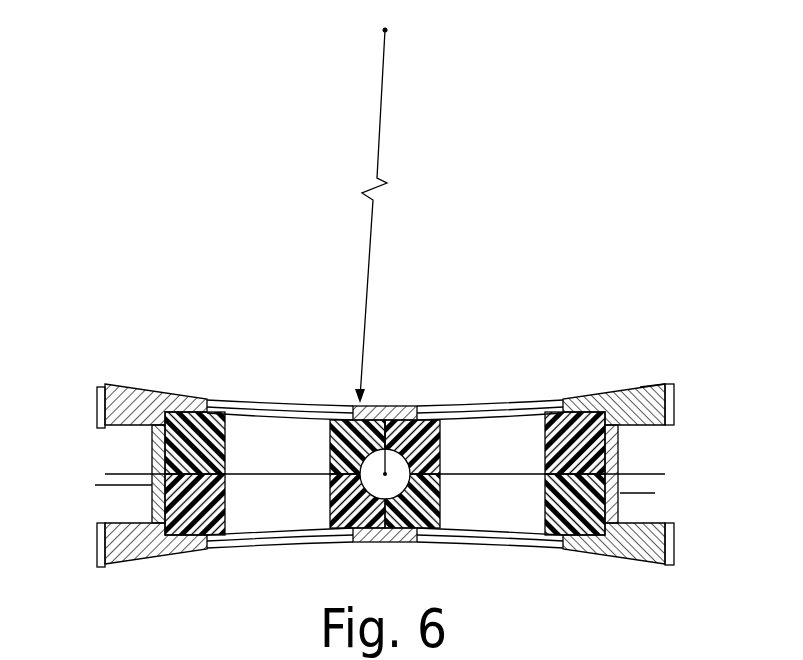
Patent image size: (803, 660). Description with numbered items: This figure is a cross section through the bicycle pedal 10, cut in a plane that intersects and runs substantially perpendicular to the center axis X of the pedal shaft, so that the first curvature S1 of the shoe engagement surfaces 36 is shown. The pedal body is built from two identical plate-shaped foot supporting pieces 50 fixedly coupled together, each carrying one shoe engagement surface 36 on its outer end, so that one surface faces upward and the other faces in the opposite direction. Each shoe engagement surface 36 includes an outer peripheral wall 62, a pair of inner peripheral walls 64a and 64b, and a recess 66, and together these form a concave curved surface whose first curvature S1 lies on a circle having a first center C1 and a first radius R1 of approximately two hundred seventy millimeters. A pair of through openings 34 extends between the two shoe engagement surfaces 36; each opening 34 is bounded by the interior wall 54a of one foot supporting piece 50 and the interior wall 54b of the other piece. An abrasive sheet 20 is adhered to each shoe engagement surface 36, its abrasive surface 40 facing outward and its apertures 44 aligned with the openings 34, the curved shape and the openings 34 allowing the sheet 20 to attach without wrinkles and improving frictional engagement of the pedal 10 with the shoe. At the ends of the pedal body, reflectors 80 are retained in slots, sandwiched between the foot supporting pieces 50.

The bicycle pedal 10 is at (641, 323).
The abrasive sheets 20 is at (610, 387).
The through openings 34 is at (238, 500).
The shoe engagement surfaces 36 is at (380, 398).
The abrasive surface 40 is at (118, 380).
The apertures 44 is at (213, 397).
The foot supporting pieces 50 is at (673, 406).
The interior wall 54a is at (254, 405).
The interior wall 54b is at (543, 432).
The outer peripheral wall 62 is at (105, 565).
The inner peripheral wall 64a is at (231, 397).
The inner peripheral wall 64b is at (443, 421).
The recess 66 is at (637, 387).
The reflectors 80 is at (95, 485).
The first center C1 is at (405, 42).
The first radius R1 is at (387, 216).
The first curvature S1 is at (145, 388).
The center axis X is at (390, 400).